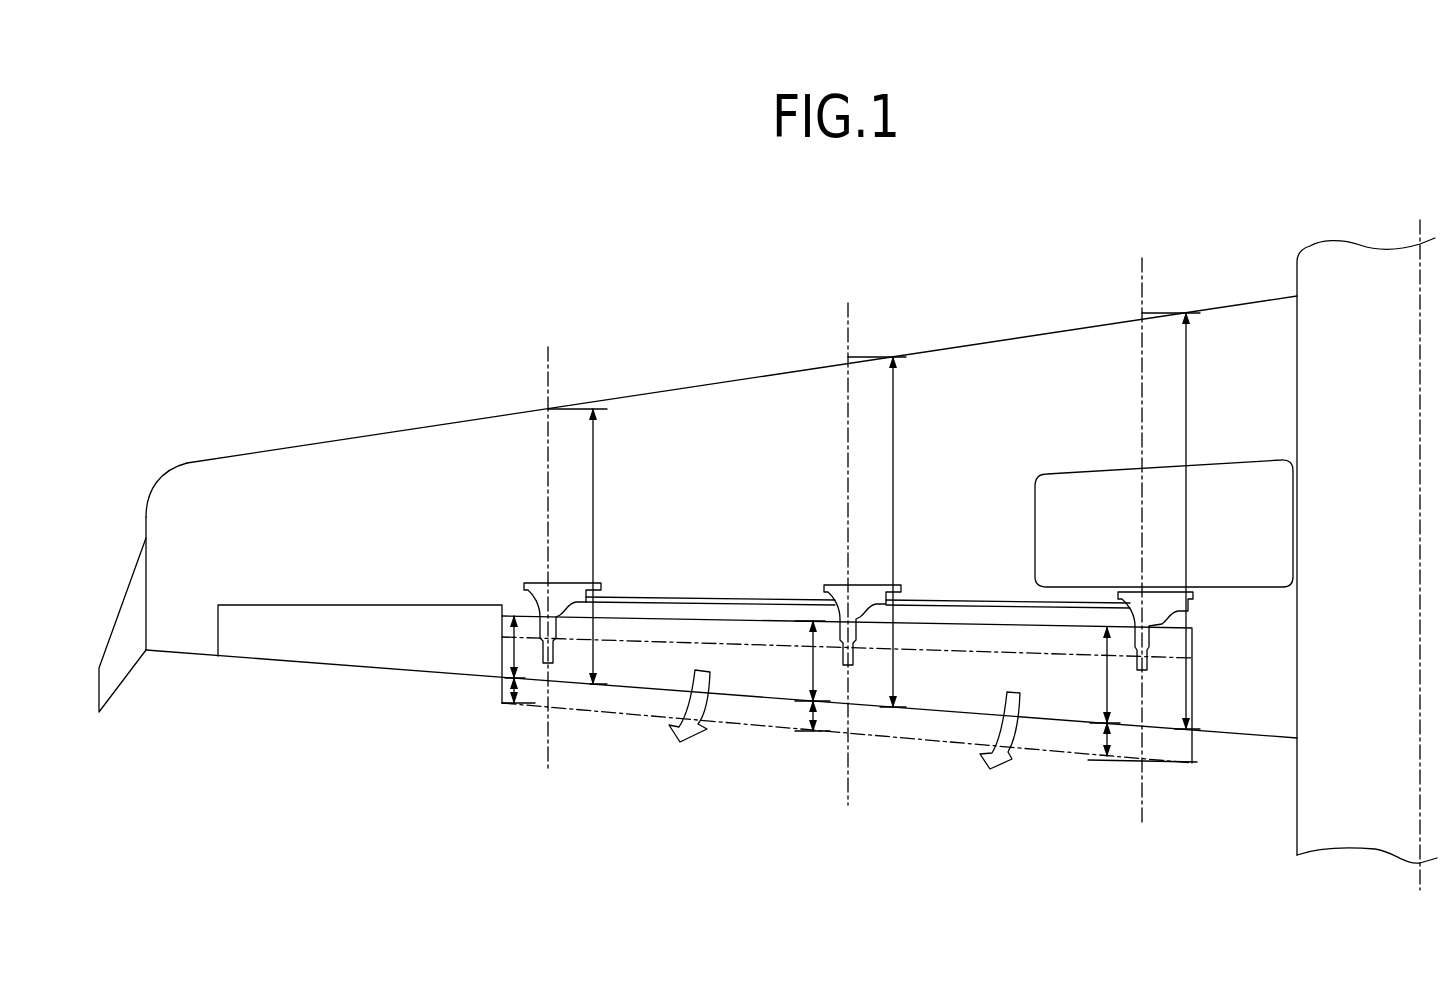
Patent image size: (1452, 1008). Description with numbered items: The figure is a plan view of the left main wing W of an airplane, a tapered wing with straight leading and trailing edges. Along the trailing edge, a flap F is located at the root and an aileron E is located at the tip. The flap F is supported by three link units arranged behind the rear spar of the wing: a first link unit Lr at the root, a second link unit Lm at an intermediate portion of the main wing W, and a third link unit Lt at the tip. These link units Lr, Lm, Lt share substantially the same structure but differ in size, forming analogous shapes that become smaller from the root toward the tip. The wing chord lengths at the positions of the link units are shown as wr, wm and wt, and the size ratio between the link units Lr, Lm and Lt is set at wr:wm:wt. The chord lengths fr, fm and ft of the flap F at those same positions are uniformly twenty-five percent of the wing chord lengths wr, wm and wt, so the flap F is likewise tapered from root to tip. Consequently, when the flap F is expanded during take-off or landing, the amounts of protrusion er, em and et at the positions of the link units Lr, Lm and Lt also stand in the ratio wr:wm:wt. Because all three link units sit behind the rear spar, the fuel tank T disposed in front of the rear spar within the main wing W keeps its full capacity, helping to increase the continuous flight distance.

The main wing W is at (682, 351).
The aileron E is at (298, 648).
The flap F is at (655, 682).
The fuel tank T is at (1218, 478).
The third link unit Lt is at (514, 578).
The second link unit Lm is at (812, 583).
The first link unit Lr is at (1109, 597).
The chord length of main wing at third link unit wt is at (579, 546).
The chord length of main wing at second link unit wm is at (886, 532).
The chord length of main wing at first link unit wr is at (1173, 521).
The chord length of flap at third link unit ft is at (502, 650).
The chord length of flap at second link unit fm is at (813, 665).
The chord length of flap at first link unit fr is at (1107, 690).
The amount of protrusion of flap at third link unit et is at (502, 693).
The amount of protrusion of flap at second link unit em is at (808, 717).
The amount of protrusion of flap at first link unit er is at (1100, 743).